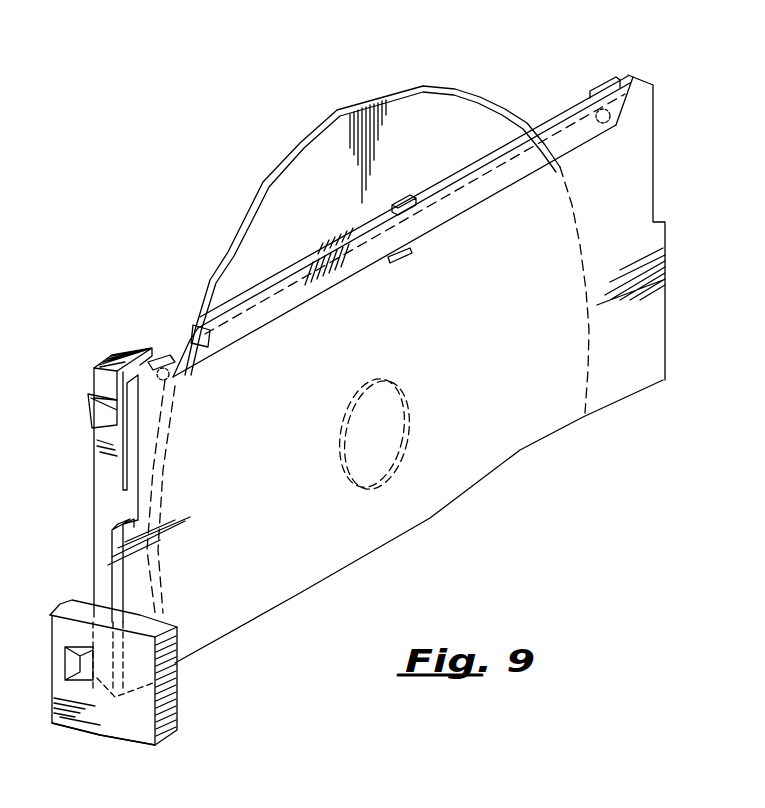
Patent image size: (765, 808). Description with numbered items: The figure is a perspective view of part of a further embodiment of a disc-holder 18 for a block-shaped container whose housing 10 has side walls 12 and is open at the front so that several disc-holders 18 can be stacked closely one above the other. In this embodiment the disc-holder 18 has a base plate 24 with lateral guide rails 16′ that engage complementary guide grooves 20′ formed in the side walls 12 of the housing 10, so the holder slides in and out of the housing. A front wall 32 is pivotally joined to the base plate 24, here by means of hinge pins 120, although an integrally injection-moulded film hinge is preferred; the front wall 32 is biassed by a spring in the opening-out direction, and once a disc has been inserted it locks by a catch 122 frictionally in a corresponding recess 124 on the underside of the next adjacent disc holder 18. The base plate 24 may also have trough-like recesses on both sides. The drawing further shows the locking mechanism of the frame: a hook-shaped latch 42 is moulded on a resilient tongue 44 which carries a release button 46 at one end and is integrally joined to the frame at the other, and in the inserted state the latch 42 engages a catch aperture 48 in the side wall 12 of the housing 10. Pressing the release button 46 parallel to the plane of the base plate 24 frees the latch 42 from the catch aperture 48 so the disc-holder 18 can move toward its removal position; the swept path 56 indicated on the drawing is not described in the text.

The housing 10 is at (80, 748).
The side wall 12 is at (140, 735).
The lateral guide rail 16′ is at (663, 243).
The disc-holder 18 is at (662, 122).
The guide groove 20′ is at (128, 607).
The base plate 24 is at (513, 430).
The front wall 32 is at (552, 127).
The hook-shaped latch 42 is at (97, 409).
The resilient tongue 44 is at (103, 465).
The release button 46 is at (129, 349).
The catch aperture 48 is at (62, 657).
The swing arc 56 is at (408, 107).
The hinge pin 120 is at (597, 76).
The catch 122 is at (404, 197).
The recess 124 is at (405, 265).